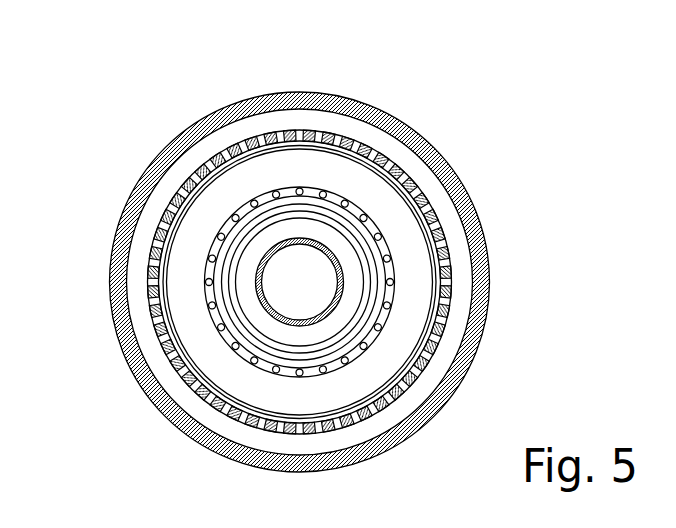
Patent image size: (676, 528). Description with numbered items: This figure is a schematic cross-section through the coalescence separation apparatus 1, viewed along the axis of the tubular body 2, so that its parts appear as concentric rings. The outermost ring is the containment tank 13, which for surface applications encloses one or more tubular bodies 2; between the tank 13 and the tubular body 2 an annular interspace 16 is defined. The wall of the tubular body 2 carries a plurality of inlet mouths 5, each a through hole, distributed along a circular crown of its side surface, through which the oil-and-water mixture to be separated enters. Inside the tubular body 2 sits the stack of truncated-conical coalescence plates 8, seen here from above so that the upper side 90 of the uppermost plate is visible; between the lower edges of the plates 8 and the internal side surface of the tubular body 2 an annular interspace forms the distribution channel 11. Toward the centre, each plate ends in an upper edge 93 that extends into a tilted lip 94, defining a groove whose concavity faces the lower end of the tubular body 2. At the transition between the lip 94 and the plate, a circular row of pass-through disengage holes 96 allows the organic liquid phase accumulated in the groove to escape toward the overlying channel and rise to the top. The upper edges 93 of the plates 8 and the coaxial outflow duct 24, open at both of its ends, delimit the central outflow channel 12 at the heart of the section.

The coalescence separation apparatus 1 is at (531, 106).
The tubular body 2 is at (348, 243).
The inlet mouth 5 is at (453, 237).
The coalescence plates 8 is at (157, 335).
The distribution channel 11 is at (177, 420).
The outflow channel 12 is at (280, 235).
The containment tank 13 is at (488, 204).
The annular interspace 16 is at (318, 443).
The outflow duct 24 is at (263, 310).
The upper side 90 is at (385, 198).
The upper edge 93 is at (207, 294).
The lip 94 is at (270, 355).
The disengage hole 96 is at (368, 345).